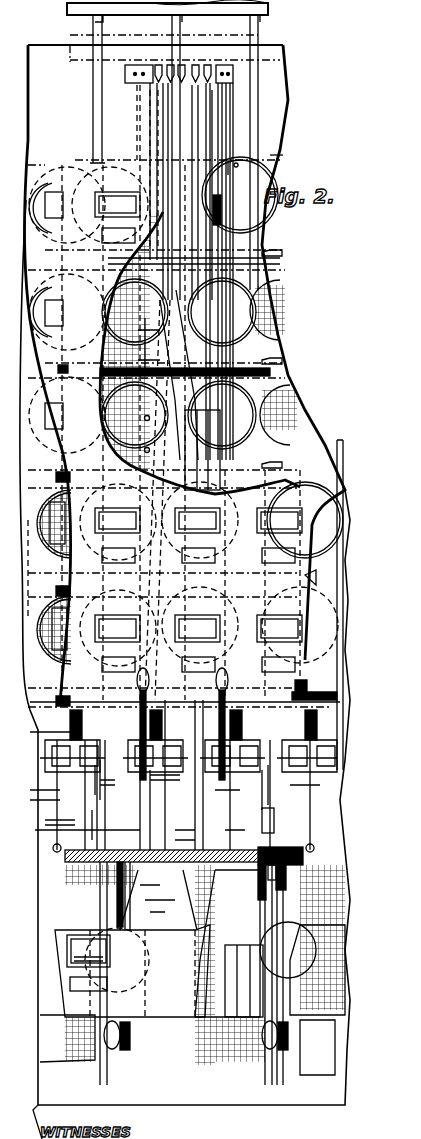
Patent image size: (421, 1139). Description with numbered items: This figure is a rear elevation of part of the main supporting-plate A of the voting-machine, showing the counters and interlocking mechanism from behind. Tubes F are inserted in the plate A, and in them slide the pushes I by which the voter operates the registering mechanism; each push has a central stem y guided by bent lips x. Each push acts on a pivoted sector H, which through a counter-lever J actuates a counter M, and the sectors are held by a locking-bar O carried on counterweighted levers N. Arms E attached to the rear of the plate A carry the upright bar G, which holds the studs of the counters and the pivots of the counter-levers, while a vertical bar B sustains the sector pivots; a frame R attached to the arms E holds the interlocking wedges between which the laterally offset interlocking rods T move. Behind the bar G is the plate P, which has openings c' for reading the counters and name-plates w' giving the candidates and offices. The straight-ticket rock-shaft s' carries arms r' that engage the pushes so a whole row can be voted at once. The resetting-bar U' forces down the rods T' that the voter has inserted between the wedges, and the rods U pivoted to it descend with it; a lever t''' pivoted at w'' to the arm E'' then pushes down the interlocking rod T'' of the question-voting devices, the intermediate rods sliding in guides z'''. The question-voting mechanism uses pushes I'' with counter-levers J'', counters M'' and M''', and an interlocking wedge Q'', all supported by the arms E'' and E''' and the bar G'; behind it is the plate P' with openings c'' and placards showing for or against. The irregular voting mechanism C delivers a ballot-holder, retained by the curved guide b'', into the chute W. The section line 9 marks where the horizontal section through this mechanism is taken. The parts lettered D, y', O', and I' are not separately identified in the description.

The resetting-bar U' is at (149, 15).
The rod U is at (219, 432).
The interlocking rod T' is at (185, 157).
The lever rod D is at (150, 676).
The frame R is at (157, 455).
The arm E is at (217, 424).
The upright bar G is at (199, 270).
The interlocking rod T is at (143, 191).
The counterweighted lever N is at (212, 125).
The vertical bar B is at (232, 130).
The vertical plate A is at (105, 567).
The locking-bar O is at (235, 300).
The section line 9 is at (183, 153).
The bent lip x is at (229, 513).
The push I is at (186, 410).
The central stem y is at (229, 210).
The name-plate w' is at (173, 416).
The opening c' is at (190, 450).
The sector H is at (222, 460).
The rock-shaft s' is at (299, 472).
The plate P is at (201, 416).
The arm r' is at (140, 344).
The counter M is at (169, 470).
The counter-lever J is at (234, 375).
The tube F is at (169, 535).
The pin y' is at (138, 424).
The pin O' is at (136, 457).
The irregular voting mechanism C is at (70, 725).
The curved guide b'' is at (186, 796).
The pivoted lever t''' is at (191, 785).
The interlocking wedge Q'' is at (171, 810).
The guide block z''' is at (171, 825).
The pivot w'' is at (275, 823).
The arm E'' is at (221, 872).
The interlocking rod T'' is at (177, 973).
The chute W is at (192, 982).
The bar G' is at (299, 881).
The counter M'' is at (127, 960).
The counter M''' is at (239, 966).
The push I'' is at (117, 960).
The dial I' is at (288, 950).
The plate P' is at (123, 957).
The opening c'' is at (93, 992).
The counter-lever J'' is at (191, 1046).
The arm E''' is at (213, 1045).